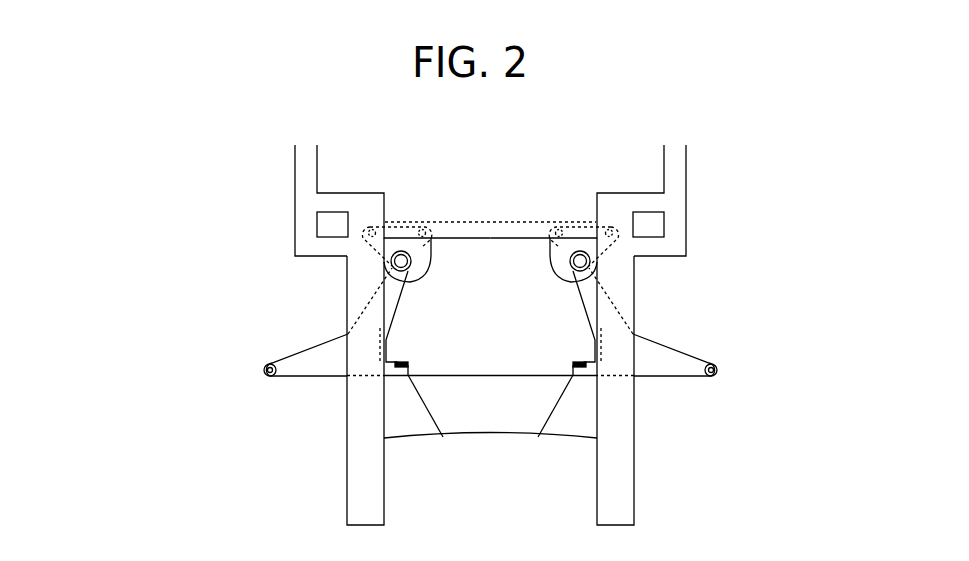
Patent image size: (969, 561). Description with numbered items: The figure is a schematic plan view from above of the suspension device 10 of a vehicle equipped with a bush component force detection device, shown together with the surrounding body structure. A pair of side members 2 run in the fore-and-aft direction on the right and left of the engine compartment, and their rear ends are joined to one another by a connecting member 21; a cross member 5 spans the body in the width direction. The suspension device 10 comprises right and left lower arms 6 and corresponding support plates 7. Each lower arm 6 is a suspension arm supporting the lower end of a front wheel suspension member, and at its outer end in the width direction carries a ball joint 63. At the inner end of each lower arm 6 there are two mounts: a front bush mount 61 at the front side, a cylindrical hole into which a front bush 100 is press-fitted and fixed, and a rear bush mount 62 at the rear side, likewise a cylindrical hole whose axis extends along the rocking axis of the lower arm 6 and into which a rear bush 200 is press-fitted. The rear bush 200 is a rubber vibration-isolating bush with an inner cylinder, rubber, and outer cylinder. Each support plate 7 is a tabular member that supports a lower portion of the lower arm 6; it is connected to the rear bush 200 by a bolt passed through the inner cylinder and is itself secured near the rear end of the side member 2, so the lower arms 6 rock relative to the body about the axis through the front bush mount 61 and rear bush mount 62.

The suspension device 10 is at (178, 233).
The connecting member 21 is at (531, 225).
The side member 2 is at (347, 505).
The support plate 7 is at (558, 255).
The rear bush mount 62 is at (392, 265).
The rear bush 200 is at (396, 272).
The front bush 100 is at (403, 362).
The lower arm 6 is at (323, 342).
The ball joint 63 is at (264, 371).
The cross member 5 is at (487, 388).
The front bush mount 61 is at (443, 437).